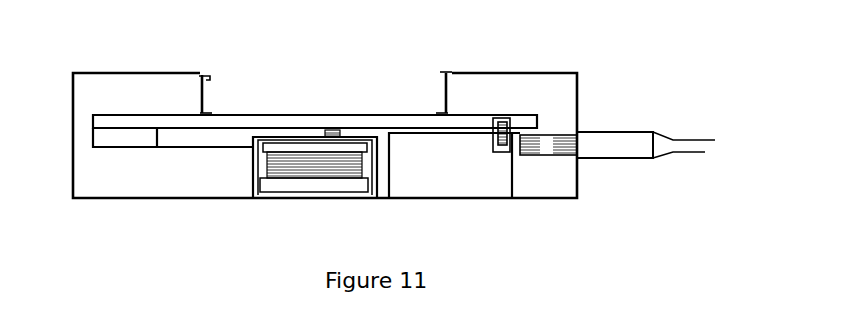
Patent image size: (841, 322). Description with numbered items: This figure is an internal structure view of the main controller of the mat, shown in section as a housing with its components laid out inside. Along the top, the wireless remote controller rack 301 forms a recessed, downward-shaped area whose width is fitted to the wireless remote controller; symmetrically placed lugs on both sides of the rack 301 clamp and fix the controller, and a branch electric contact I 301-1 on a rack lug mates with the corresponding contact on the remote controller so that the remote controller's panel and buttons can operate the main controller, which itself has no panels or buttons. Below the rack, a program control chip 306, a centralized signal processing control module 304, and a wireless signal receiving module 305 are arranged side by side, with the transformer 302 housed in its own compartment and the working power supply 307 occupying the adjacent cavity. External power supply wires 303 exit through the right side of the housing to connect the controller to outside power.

The wireless remote controller rack 301 is at (443, 86).
The branch electric contact I 301-1 is at (207, 104).
The transformer 302 is at (252, 186).
The external power supply wires 303 is at (615, 160).
The centralized signal processing control module 304 is at (117, 138).
The wireless signal receiving module 305 is at (170, 139).
The program control chip 306 is at (95, 124).
The working power supply 307 is at (435, 182).